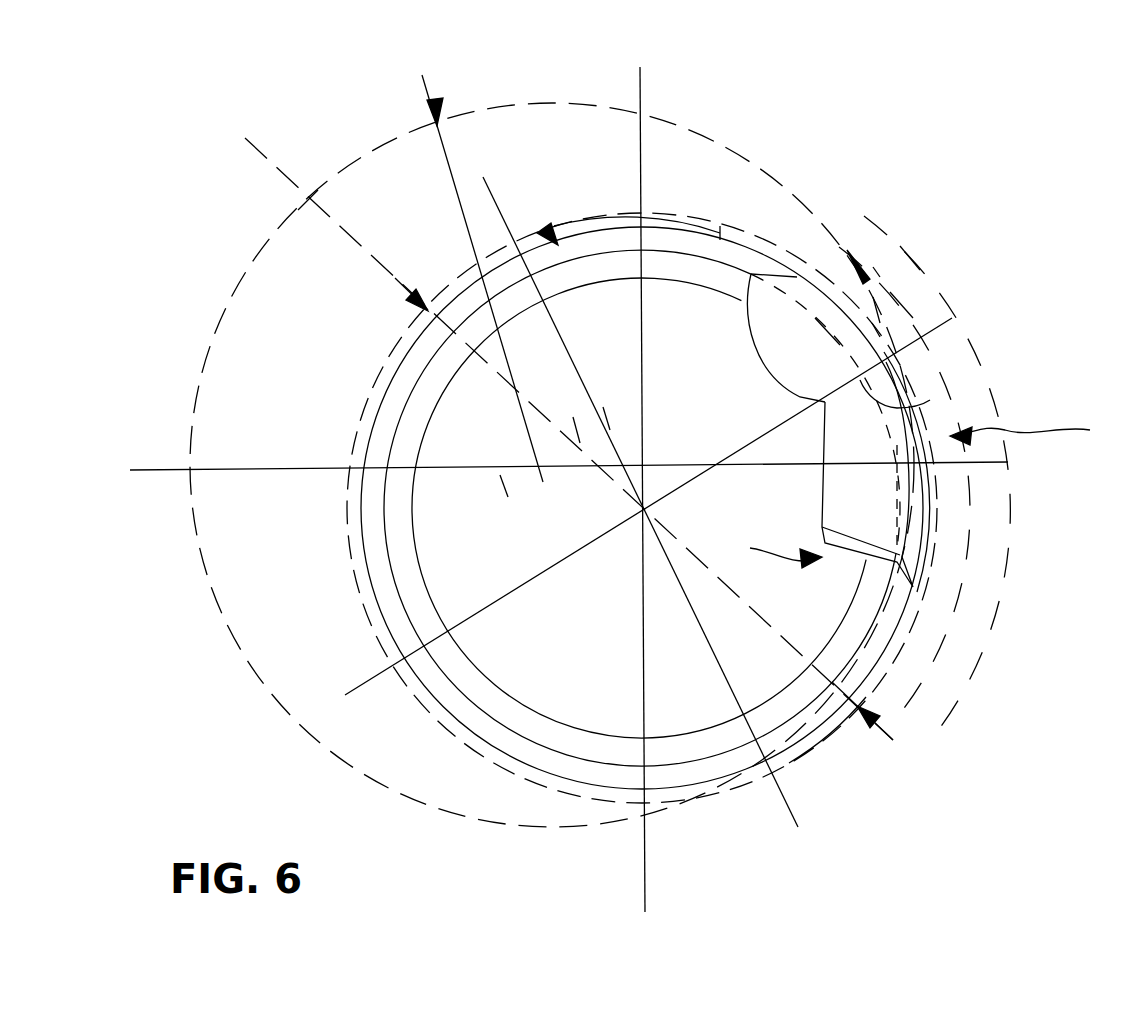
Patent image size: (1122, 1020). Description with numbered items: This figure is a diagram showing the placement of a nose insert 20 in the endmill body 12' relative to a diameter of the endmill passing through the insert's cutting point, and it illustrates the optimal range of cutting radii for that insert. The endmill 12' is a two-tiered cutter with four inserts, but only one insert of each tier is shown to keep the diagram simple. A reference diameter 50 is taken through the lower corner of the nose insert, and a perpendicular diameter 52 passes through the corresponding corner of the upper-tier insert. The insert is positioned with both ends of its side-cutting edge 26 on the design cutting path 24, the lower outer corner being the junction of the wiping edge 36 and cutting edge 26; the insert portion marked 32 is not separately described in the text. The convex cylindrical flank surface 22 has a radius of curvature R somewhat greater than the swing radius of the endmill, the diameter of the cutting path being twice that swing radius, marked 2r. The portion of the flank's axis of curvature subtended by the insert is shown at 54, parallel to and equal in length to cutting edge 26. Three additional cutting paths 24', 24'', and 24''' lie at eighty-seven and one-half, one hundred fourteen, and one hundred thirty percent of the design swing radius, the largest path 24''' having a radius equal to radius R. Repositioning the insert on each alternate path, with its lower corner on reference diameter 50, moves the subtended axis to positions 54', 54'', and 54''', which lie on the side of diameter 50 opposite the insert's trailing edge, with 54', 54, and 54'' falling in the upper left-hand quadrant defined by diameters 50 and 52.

The endmill body 12' is at (642, 508).
The nose insert 20 is at (916, 491).
The convex cylindrical flank surface 22 is at (923, 498).
The cutting path 24 is at (656, 221).
The alternate cutting path 24' is at (830, 338).
The alternate cutting path 24'' is at (914, 454).
The alternate cutting path 24''' is at (984, 249).
The side-cutting edge 26 is at (912, 385).
The insert piece 32 is at (874, 508).
The wiping edge 36 is at (930, 400).
The reference diameter 50 is at (460, 608).
The perpendicular diameter 52 is at (562, 335).
The subtended portion of the axis of curvature 54 is at (558, 514).
The projection of the subtended axis of curvature 54' is at (464, 495).
The projection of the subtended axis of curvature 54'' is at (605, 393).
The projection of the subtended axis of curvature 54''' is at (670, 414).
The radius of curvature R is at (475, 261).
The diameter 2r is at (552, 465).